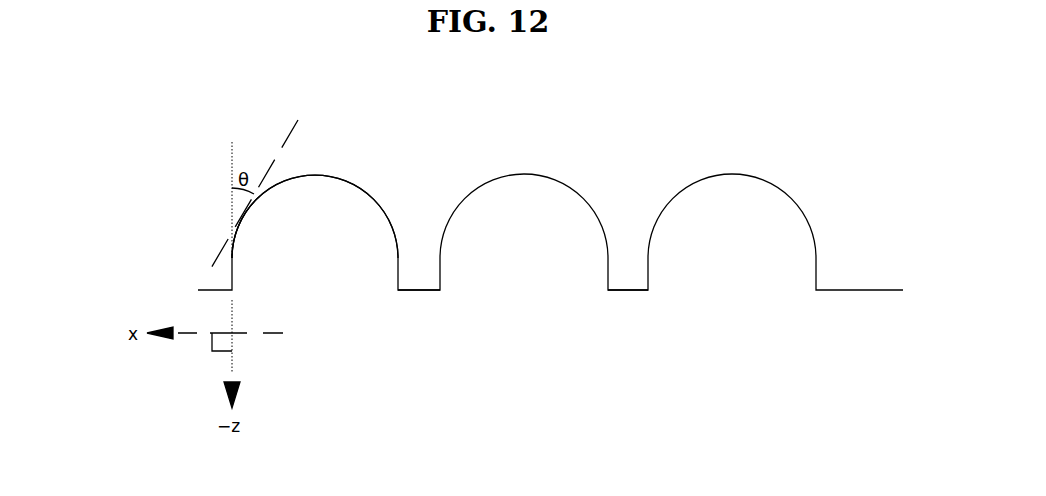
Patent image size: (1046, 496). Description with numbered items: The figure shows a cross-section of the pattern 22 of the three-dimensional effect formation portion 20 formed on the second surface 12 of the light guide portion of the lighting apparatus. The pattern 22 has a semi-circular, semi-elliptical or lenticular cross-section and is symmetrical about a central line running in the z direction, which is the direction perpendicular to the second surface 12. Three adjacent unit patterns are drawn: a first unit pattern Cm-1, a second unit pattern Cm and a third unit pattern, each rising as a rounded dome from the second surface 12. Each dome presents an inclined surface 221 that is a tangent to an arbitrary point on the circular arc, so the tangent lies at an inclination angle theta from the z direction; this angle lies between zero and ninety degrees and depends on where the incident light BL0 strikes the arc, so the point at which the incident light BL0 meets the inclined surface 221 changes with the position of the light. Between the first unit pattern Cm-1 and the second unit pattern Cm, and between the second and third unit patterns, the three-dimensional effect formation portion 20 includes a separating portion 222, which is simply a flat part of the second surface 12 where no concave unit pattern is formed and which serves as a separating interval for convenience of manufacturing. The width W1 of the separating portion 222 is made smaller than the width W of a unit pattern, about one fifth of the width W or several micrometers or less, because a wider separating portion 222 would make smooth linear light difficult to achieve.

The second surface 12 is at (858, 291).
The three-dimensional effect formation portion 20 is at (698, 142).
The pattern 22 is at (315, 174).
The inclined surface 221 is at (238, 214).
The separating portion 222 is at (412, 291).
The first unit pattern Cm-1 is at (378, 198).
The second unit pattern Cm is at (584, 200).
The incident light BL0 is at (197, 200).
The width of the separating portion W1 is at (362, 322).
The width of a unit pattern W is at (607, 305).